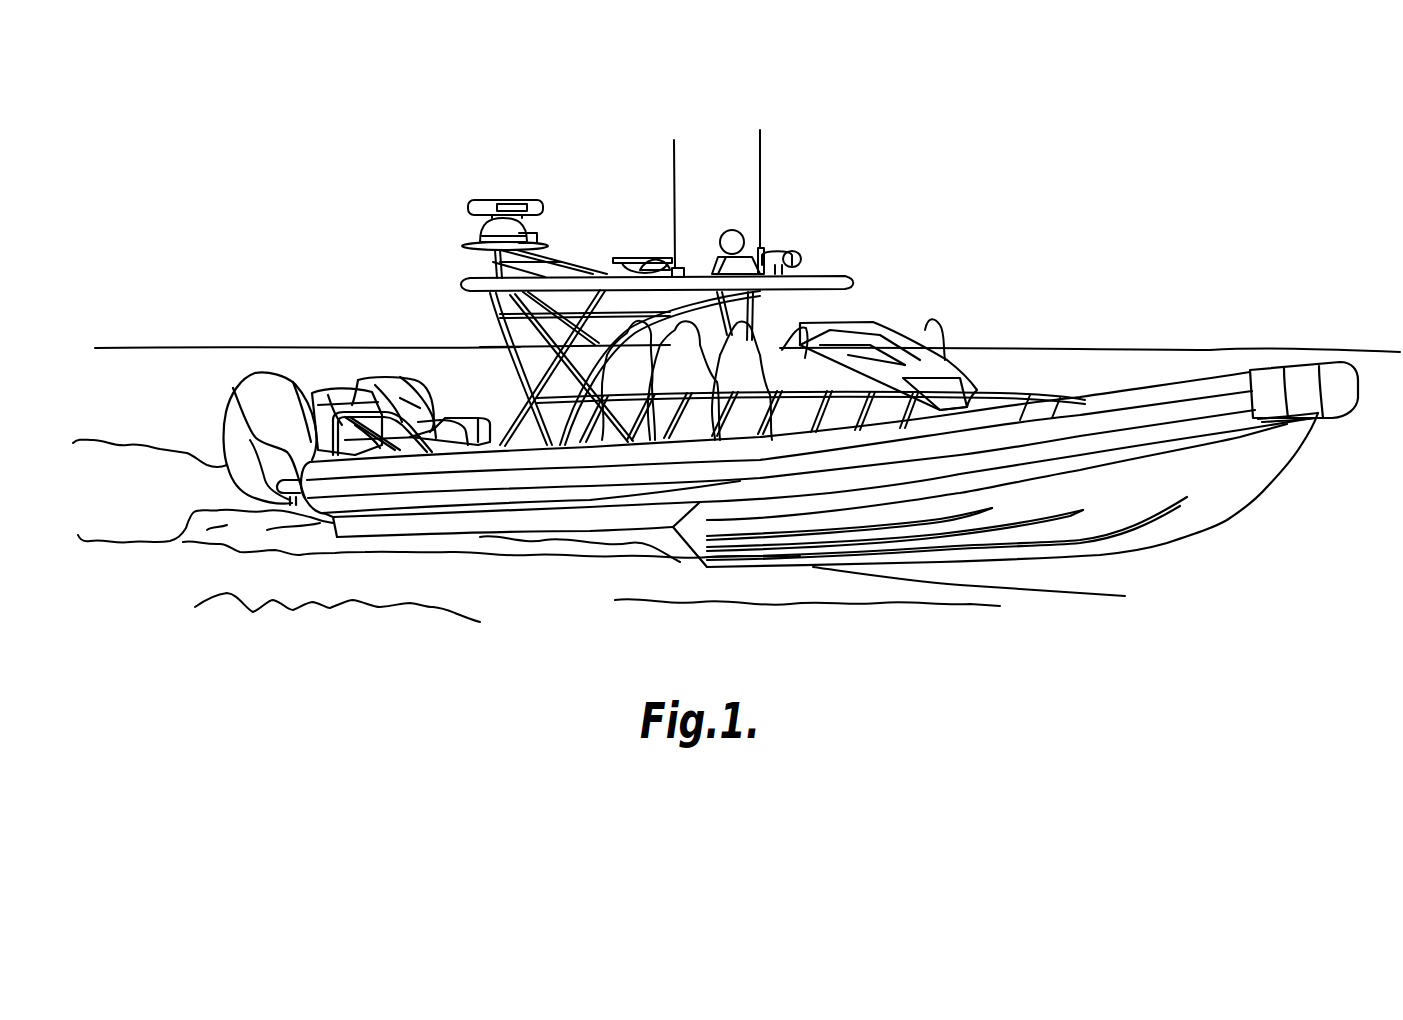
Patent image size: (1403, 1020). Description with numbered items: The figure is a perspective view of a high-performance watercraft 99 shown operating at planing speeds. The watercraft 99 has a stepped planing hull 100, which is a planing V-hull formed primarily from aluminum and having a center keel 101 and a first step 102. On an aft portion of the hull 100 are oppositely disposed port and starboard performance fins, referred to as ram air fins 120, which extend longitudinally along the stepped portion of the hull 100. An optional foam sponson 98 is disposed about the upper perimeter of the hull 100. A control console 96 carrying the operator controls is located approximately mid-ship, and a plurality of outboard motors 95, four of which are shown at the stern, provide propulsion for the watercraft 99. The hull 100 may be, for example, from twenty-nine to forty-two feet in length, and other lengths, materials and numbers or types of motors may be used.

The outboard motors 95 is at (236, 388).
The control console 96 is at (947, 370).
The foam sponson 98 is at (1228, 395).
The watercraft 99 is at (1040, 321).
The stepped planing hull 100 is at (1303, 438).
The center keel 101 is at (1166, 548).
The first step 102 is at (690, 562).
The ram air fins 120 is at (414, 537).